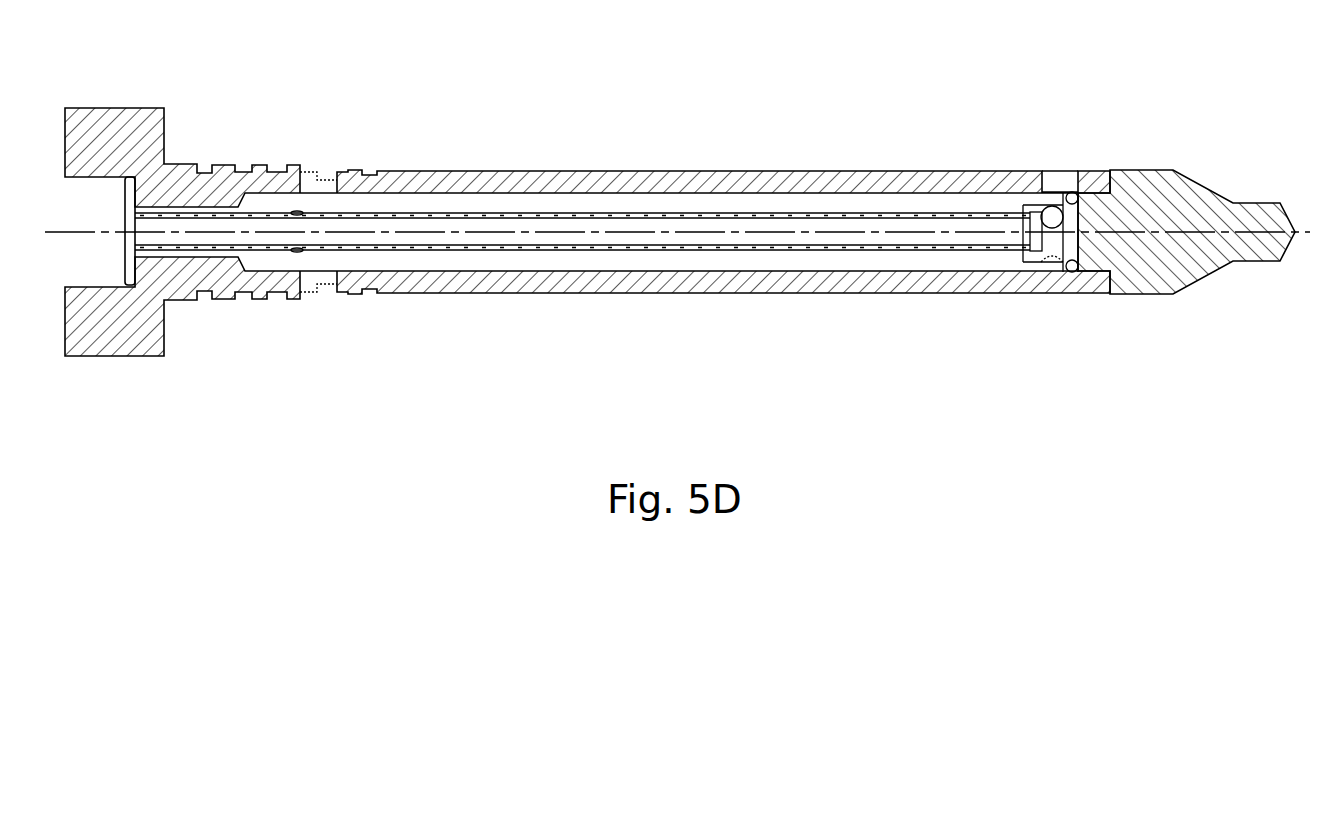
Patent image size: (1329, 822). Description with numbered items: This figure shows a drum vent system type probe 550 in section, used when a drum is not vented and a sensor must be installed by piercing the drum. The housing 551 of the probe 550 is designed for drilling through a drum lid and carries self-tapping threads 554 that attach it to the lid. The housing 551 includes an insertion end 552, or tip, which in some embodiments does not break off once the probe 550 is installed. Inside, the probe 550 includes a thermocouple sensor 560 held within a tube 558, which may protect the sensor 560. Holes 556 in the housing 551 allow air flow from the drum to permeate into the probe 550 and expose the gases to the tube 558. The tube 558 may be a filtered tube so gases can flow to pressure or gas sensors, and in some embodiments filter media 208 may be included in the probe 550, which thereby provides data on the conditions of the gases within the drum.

The filter media 208 is at (124, 200).
The drum vent system type probe 550 is at (1215, 126).
The housing 551 is at (805, 172).
The insertion end 552 is at (1255, 203).
The self-tapping threads 554 is at (227, 164).
The holes 556 is at (1058, 172).
The tube 558 is at (653, 250).
The thermocouple sensor 560 is at (576, 232).